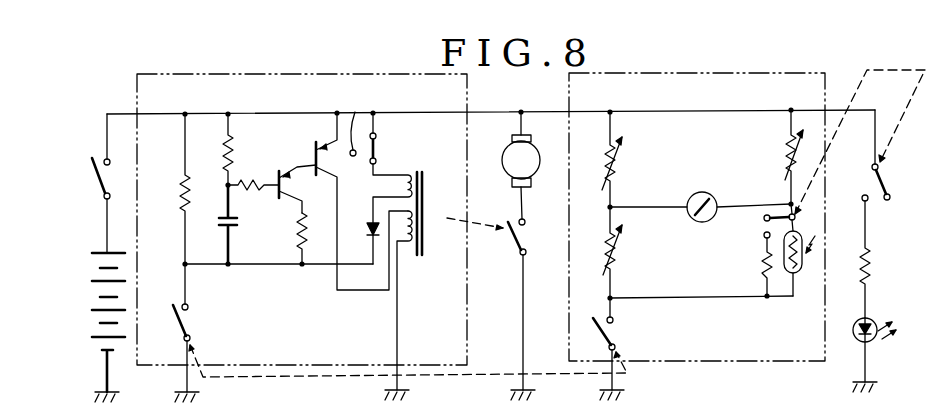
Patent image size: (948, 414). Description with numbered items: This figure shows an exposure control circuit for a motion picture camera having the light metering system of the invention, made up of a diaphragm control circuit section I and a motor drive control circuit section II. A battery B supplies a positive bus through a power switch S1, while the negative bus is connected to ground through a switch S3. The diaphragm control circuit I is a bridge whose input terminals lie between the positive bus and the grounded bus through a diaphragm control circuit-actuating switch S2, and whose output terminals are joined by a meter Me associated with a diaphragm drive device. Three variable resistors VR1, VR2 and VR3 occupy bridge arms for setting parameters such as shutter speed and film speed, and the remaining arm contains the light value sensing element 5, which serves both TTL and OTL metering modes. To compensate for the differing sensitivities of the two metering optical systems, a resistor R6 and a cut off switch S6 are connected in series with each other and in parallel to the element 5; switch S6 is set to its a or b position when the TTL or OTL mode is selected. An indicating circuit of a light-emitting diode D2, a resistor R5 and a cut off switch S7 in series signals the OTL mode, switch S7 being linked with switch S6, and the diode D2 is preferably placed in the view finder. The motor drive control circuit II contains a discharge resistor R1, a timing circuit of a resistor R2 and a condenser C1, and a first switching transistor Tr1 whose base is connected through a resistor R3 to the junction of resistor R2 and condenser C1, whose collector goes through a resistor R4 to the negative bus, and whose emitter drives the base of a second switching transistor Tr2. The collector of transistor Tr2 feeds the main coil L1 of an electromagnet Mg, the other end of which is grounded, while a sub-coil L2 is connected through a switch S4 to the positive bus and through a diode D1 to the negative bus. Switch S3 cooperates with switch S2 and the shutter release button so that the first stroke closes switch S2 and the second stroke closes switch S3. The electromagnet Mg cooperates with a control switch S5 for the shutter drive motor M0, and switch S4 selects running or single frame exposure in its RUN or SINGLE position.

The diaphragm control circuit section I is at (726, 339).
The motor drive control circuit section II is at (292, 337).
The power switch S1 is at (95, 183).
The battery B is at (101, 327).
The discharge resistor R1 is at (177, 189).
The resistor R2 is at (218, 149).
The condenser C1 is at (218, 224).
The resistor R3 is at (253, 169).
The first switching transistor Tr1 is at (293, 176).
The second switching transistor Tr2 is at (356, 201).
The resistor R4 is at (290, 238).
The switch S3 is at (177, 333).
The switch S4 is at (374, 129).
The sub-coil L2 is at (403, 185).
The diode D1 is at (368, 236).
The main coil L1 is at (410, 244).
The electromagnet Mg is at (460, 213).
The shutter drive motor M0 is at (508, 168).
The control switch S5 is at (515, 311).
The variable resistor VR2 is at (638, 159).
The variable resistor VR3 is at (639, 252).
The meter Me is at (708, 191).
The diaphragm control circuit-actuating switch S2 is at (619, 349).
The variable resistor VR1 is at (781, 157).
The cut off switch S6 is at (790, 215).
The resistor R6 is at (758, 267).
The light value sensing element 5 is at (805, 271).
The cut off switch S7 is at (881, 162).
The resistor R5 is at (884, 259).
The light-emitting diode D2 is at (883, 343).